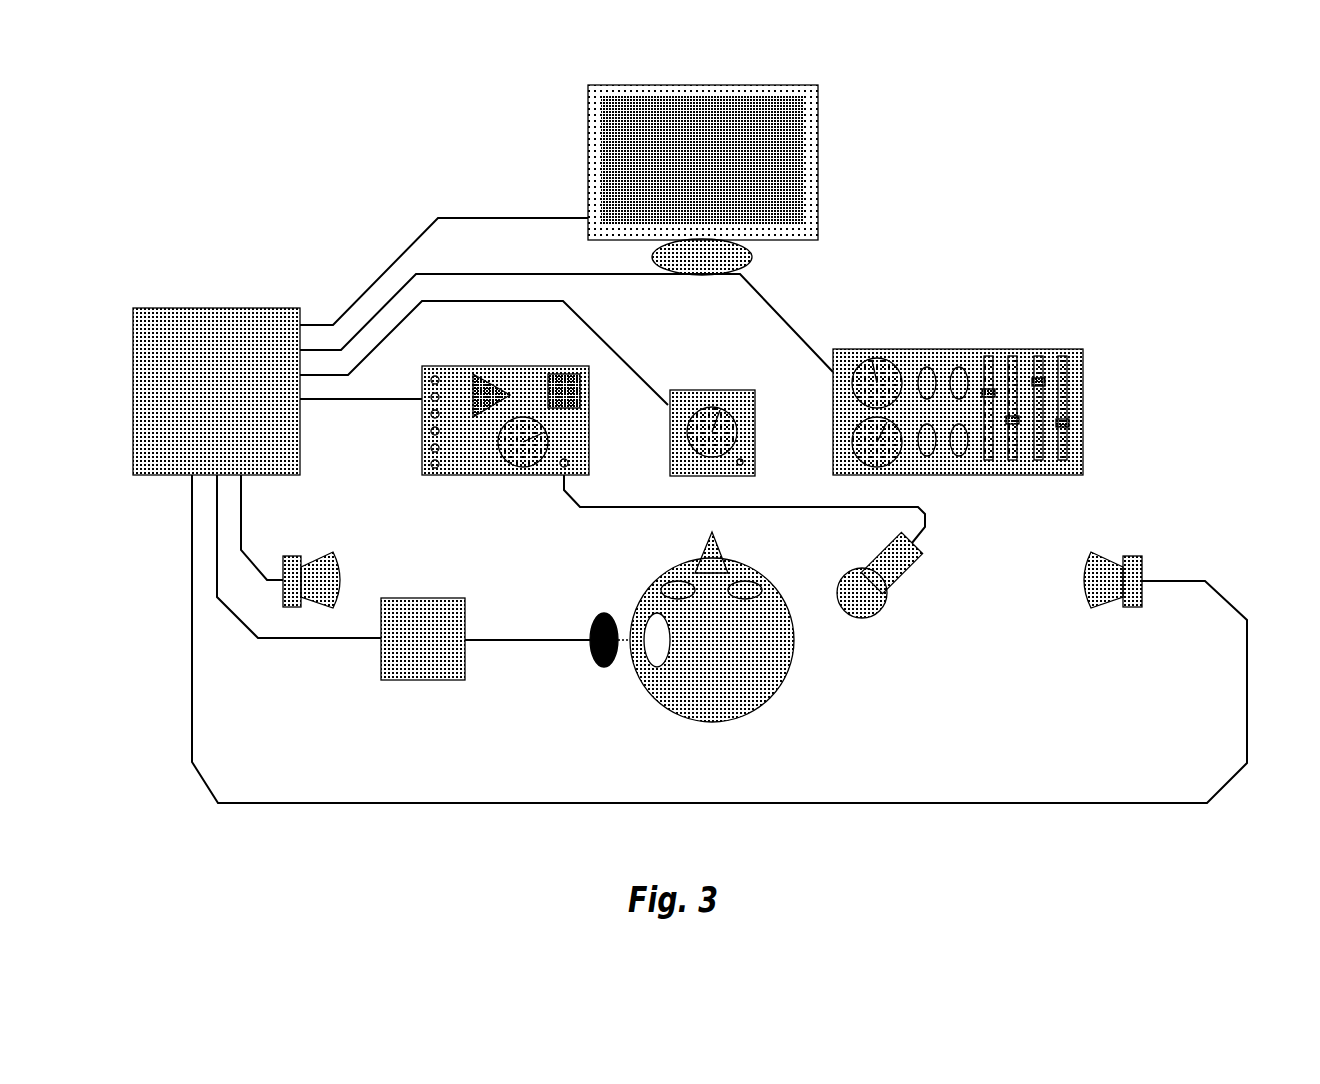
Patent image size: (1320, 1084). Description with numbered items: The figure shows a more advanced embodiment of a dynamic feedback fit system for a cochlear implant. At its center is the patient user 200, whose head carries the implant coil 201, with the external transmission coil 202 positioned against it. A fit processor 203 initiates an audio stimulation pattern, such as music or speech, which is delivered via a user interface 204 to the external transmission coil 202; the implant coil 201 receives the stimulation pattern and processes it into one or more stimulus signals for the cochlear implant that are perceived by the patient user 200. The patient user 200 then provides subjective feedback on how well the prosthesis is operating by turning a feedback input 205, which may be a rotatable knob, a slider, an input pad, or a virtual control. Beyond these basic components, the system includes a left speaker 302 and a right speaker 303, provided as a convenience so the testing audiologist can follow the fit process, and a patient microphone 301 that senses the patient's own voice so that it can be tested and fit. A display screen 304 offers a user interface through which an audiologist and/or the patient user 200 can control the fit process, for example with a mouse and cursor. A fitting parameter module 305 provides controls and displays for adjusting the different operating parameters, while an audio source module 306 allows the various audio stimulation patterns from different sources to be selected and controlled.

The patient user 200 is at (773, 565).
The implant coil 201 is at (650, 673).
The external transmission coil 202 is at (593, 617).
The fit processor 203 is at (232, 405).
The user interface 204 is at (439, 653).
The feedback input 205 is at (757, 401).
The patient microphone 301 is at (878, 613).
The left speaker 302 is at (330, 558).
The right speaker 303 is at (1090, 570).
The display screen 304 is at (828, 113).
The fitting parameter module 305 is at (1083, 370).
The audio source module 306 is at (582, 423).